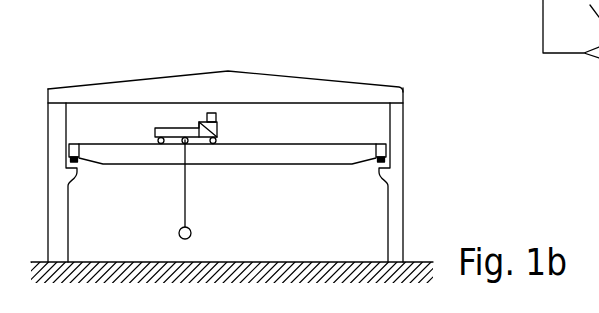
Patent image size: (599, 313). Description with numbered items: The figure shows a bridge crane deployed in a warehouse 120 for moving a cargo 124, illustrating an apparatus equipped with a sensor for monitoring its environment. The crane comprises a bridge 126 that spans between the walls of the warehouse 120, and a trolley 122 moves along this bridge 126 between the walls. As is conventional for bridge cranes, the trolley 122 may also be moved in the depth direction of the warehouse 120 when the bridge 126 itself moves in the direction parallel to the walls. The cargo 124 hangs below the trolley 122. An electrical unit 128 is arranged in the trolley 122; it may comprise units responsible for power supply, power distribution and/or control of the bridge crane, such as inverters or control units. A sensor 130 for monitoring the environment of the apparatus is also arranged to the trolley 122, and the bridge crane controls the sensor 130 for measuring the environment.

The warehouse 120 is at (432, 108).
The trolley 122 is at (155, 128).
The cargo 124 is at (191, 232).
The bridge 126 is at (163, 164).
The electrical unit 128 is at (218, 131).
The sensor 130 is at (209, 129).